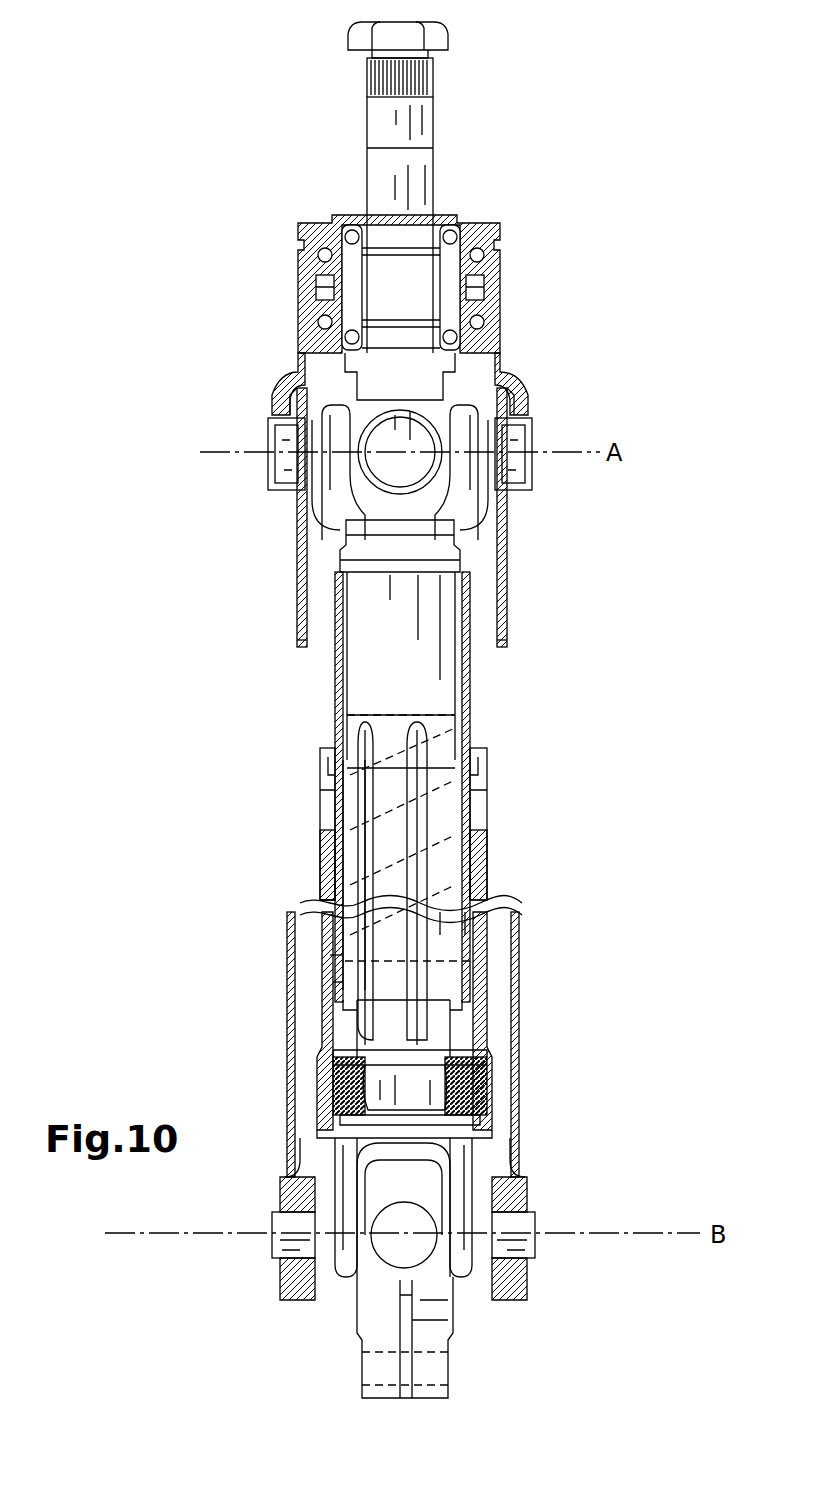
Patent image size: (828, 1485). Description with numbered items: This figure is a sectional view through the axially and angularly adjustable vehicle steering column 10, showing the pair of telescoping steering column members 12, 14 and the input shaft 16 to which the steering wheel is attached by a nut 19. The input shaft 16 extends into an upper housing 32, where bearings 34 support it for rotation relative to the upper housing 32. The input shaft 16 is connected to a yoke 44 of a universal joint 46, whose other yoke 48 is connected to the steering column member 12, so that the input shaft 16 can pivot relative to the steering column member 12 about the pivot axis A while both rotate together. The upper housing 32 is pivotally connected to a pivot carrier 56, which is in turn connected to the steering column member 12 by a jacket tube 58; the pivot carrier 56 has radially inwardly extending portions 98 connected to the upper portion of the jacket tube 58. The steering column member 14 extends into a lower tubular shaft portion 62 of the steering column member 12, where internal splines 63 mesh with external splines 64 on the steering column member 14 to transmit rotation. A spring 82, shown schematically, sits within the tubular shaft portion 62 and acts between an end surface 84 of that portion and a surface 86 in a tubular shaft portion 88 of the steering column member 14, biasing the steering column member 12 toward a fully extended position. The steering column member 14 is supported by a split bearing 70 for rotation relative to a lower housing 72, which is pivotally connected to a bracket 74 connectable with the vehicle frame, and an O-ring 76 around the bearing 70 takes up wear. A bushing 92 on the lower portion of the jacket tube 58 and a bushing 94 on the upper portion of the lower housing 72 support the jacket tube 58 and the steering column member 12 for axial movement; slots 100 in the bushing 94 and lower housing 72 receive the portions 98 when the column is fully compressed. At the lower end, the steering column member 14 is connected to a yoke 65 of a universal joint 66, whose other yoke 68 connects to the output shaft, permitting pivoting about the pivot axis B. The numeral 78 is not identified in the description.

The steering column 10 is at (606, 603).
The steering column member 12 is at (390, 673).
The steering column member 14 is at (355, 1015).
The input shaft 16 is at (405, 151).
The nut 19 is at (432, 25).
The upper housing 32 is at (487, 340).
The bearings 34 is at (352, 232).
The yoke 44 is at (388, 436).
The universal joint 46 is at (400, 392).
The yoke 48 is at (345, 510).
The pivot carrier 56 is at (503, 603).
The jacket tube 58 is at (472, 740).
The lower tubular shaft portion 62 is at (392, 823).
The internal splines 63 is at (365, 836).
The external splines 64 is at (445, 937).
The yoke 65 is at (345, 1178).
The universal joint 66 is at (440, 1180).
The yoke 68 is at (415, 1313).
The split bearing 70 is at (478, 1070).
The lower housing 72 is at (480, 1005).
The bracket 74 is at (287, 1085).
The O-ring 76 is at (480, 1090).
The jacket end 78 is at (325, 618).
The spring 82 is at (335, 885).
The end surface 84 is at (370, 720).
The surface 86 is at (472, 962).
The tubular shaft portion 88 is at (330, 958).
The bushing 92 is at (332, 983).
The bushing 94 is at (480, 760).
The radially inwardly extending portions 98 is at (483, 640).
The slots 100 is at (478, 798).